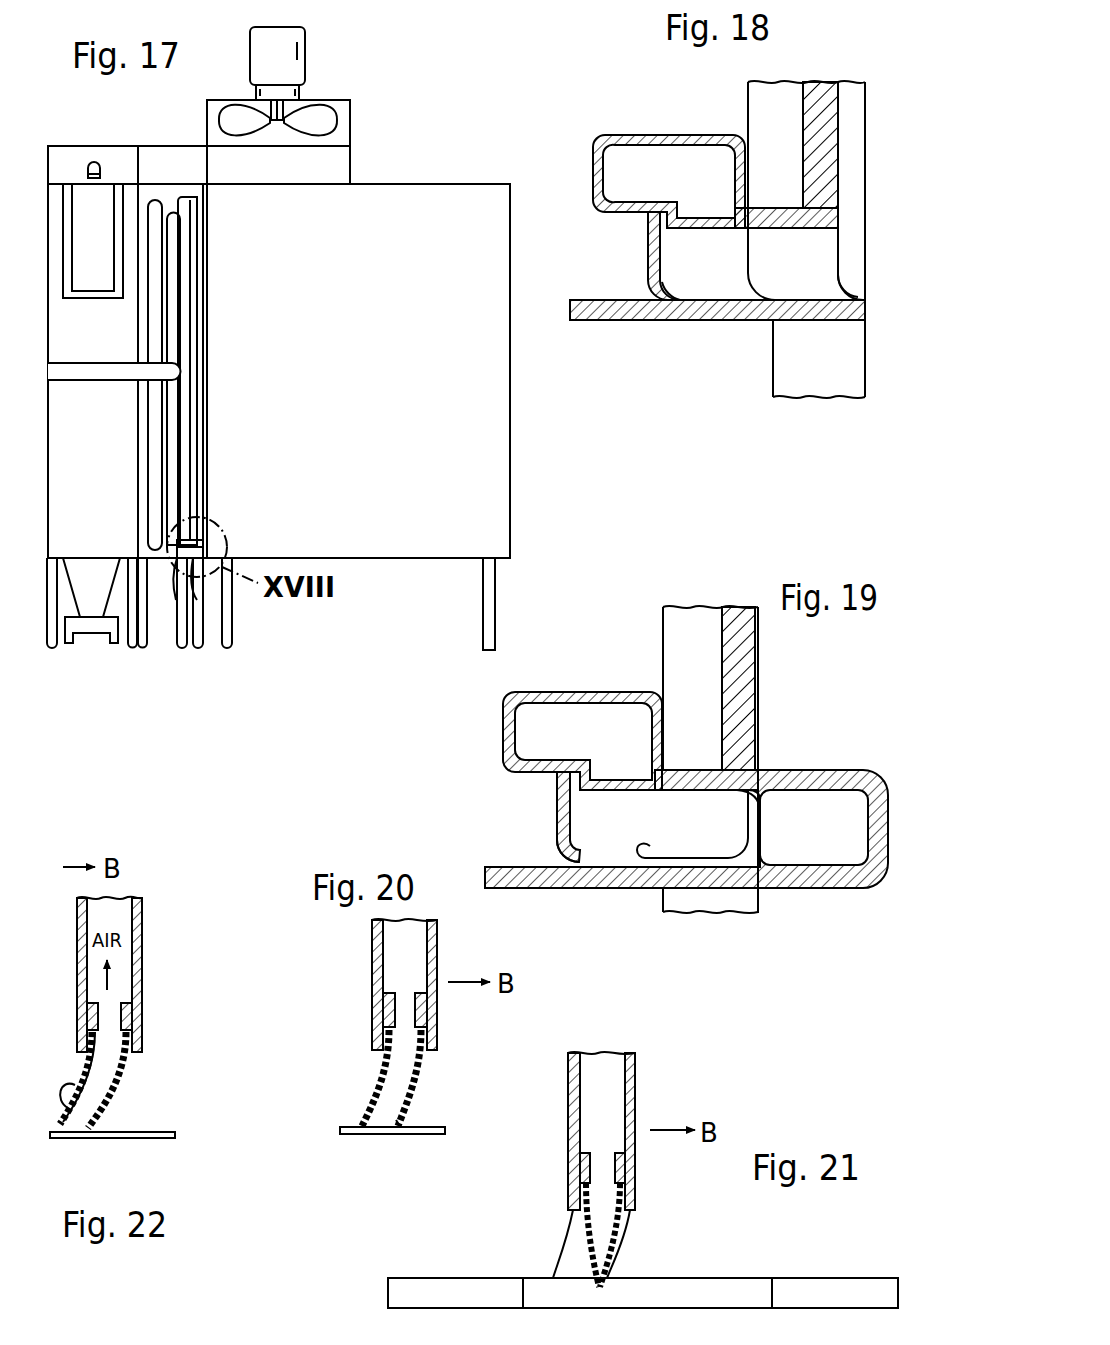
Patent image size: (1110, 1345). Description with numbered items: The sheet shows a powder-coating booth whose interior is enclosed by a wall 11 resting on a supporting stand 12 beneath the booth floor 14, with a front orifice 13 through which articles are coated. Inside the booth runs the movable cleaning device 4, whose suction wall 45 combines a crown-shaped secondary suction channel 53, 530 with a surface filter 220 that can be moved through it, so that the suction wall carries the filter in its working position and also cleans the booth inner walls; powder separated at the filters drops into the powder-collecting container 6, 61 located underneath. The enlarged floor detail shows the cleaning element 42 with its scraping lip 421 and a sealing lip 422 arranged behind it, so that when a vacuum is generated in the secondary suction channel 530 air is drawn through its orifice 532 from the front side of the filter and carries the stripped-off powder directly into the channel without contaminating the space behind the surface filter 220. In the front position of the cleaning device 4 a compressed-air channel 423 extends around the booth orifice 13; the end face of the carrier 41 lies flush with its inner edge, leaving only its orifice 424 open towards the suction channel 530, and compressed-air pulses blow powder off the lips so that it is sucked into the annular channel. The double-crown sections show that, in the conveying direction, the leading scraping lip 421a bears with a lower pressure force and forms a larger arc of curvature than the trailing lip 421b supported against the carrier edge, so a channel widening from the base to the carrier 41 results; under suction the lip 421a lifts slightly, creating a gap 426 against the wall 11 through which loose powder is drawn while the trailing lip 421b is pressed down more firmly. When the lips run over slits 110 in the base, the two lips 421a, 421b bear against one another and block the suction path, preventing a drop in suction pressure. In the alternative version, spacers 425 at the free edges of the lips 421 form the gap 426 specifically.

In FIG. 17, the cleaning device 4 is at (221, 375).
In FIG. 17, the suction wall 45 is at (185, 248).
In FIG. 17, the surface filter 220 is at (207, 378).
In FIG. 18, the surface filter 220 is at (820, 100).
In FIG. 19, the surface filter 220 is at (737, 625).
In FIG. 17, the front orifice 13 is at (510, 425).
In FIG. 19, the front orifice 13 is at (762, 652).
In FIG. 17, the air guide 53 is at (257, 516).
In FIG. 17, the secondary suction channel 530 is at (190, 527).
In FIG. 18, the secondary suction channel 530 is at (675, 160).
In FIG. 19, the secondary suction channel 530 is at (603, 710).
In FIG. 18, the orifice 532 is at (682, 220).
In FIG. 19, the orifice 532 is at (612, 782).
In FIG. 17, the cleaning element 42 is at (197, 558).
In FIG. 18, the cleaning element 42 is at (806, 274).
In FIG. 19, the cleaning element 42 is at (724, 834).
In FIG. 18, the scraping lip 421 is at (856, 286).
In FIG. 19, the scraping lip 421 is at (641, 856).
In FIG. 20, the leading scraping lip 421a is at (428, 1068).
In FIG. 21, the leading scraping lip 421a is at (615, 1256).
In FIG. 20, the trailing scraping lip 421b is at (382, 1078).
In FIG. 21, the trailing scraping lip 421b is at (575, 1256).
In FIG. 17, the sealing lip 422 is at (176, 558).
In FIG. 18, the sealing lip 422 is at (662, 277).
In FIG. 19, the sealing lip 422 is at (557, 858).
In FIG. 19, the compressed-air channel 423 is at (835, 800).
In FIG. 19, the orifice 424 is at (752, 778).
In FIG. 22, the spacers 425 is at (113, 1107).
In FIG. 22, the gap 426 is at (80, 1138).
In FIG. 20, the gap 426 is at (410, 1118).
In FIG. 17, the powder-collecting container 6 is at (85, 641).
In FIG. 17, the drive motor 61 is at (85, 647).
In FIG. 18, the carrier 41 is at (771, 215).
In FIG. 19, the carrier 41 is at (687, 782).
In FIG. 22, the carrier 41 is at (135, 912).
In FIG. 20, the carrier 41 is at (377, 940).
In FIG. 21, the carrier 41 is at (638, 1068).
In FIG. 19, the booth floor 14 is at (548, 876).
In FIG. 19, the supporting stand 12 is at (760, 905).
In FIG. 22, the wall 11 is at (162, 1131).
In FIG. 20, the wall 11 is at (386, 1135).
In FIG. 21, the wall 11 is at (430, 1278).
In FIG. 21, the slits 110 is at (730, 1290).